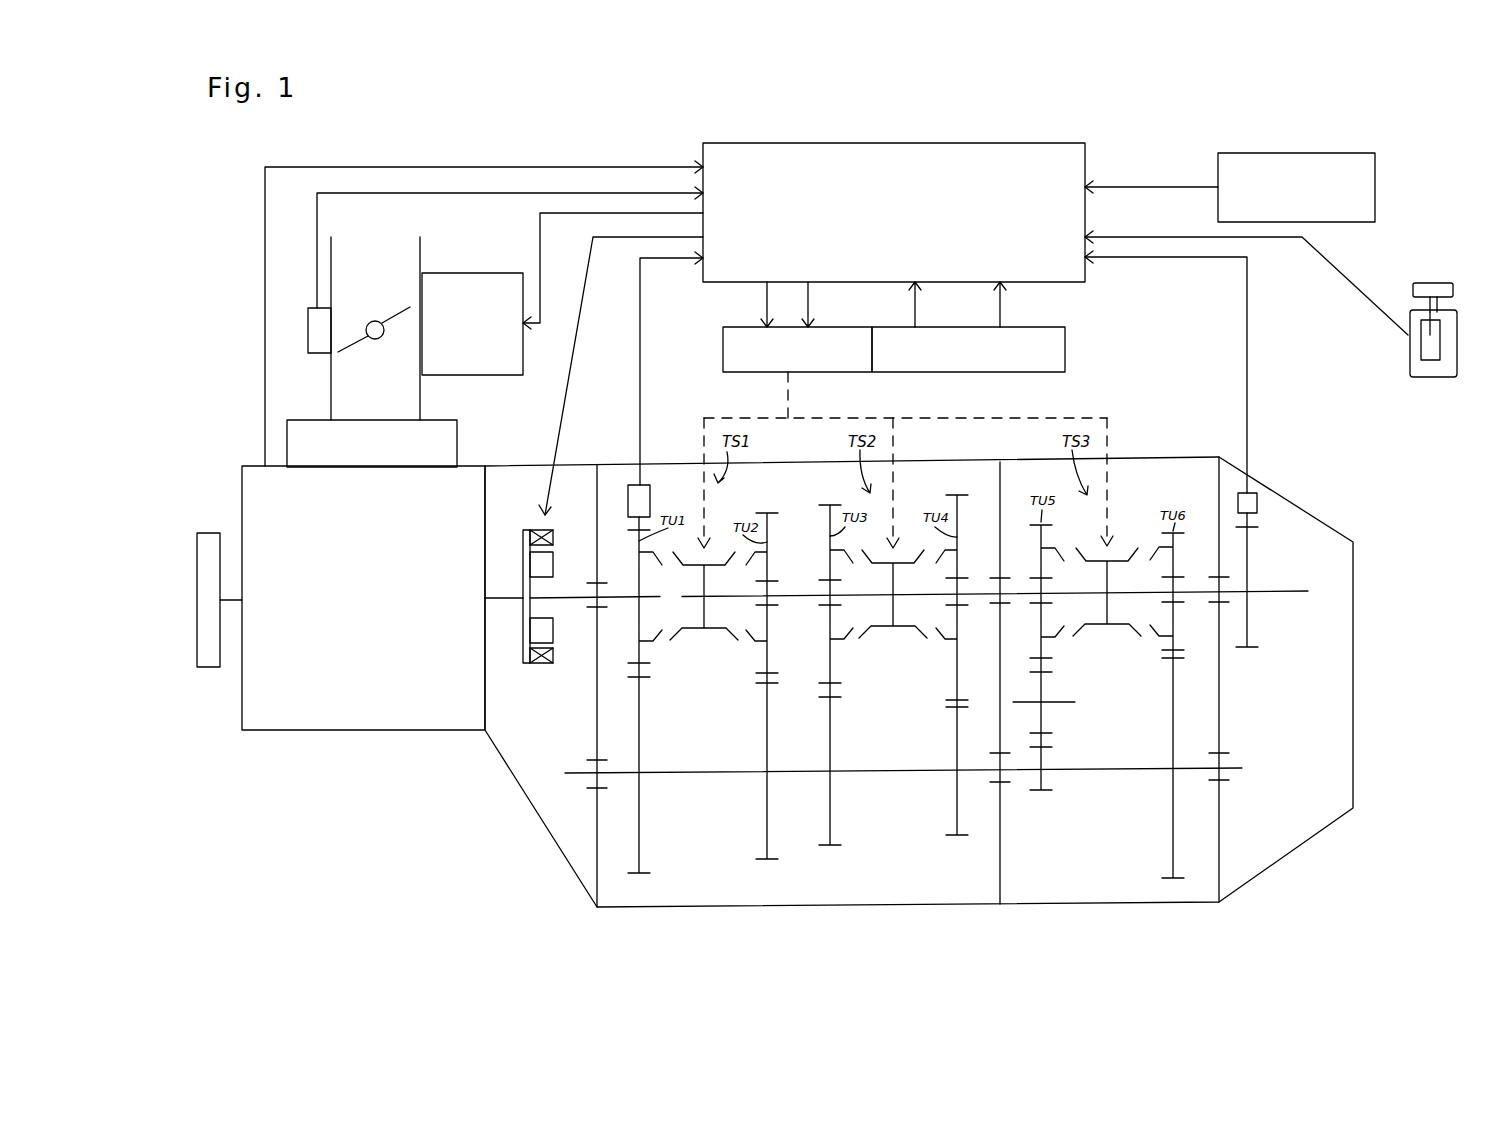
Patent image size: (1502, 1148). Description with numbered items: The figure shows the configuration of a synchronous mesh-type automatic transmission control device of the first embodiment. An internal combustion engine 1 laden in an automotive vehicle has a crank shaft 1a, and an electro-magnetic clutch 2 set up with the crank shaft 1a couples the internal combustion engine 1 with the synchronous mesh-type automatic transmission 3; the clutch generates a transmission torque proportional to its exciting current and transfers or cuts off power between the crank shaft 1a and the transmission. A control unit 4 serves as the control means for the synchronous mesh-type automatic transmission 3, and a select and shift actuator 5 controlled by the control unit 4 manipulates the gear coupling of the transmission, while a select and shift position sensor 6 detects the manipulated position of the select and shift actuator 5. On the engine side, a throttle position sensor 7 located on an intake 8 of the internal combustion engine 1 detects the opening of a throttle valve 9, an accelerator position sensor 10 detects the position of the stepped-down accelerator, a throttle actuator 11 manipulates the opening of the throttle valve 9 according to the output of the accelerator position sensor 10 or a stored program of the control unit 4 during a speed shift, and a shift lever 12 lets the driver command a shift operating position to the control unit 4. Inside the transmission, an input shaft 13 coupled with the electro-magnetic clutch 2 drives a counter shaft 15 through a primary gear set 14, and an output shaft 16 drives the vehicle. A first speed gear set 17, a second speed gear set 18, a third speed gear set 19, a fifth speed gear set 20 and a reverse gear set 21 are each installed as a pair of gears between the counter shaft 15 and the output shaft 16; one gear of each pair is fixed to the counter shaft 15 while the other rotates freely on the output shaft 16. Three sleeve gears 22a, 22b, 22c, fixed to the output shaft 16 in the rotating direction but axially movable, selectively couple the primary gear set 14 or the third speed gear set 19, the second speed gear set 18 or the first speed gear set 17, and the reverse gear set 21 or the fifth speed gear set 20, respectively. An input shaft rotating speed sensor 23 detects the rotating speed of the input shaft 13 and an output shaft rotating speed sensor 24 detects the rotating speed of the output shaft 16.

The internal combustion engine 1 is at (438, 732).
The crank shaft 1a is at (502, 602).
The electro-magnetic clutch 2 is at (535, 663).
The synchronous mesh-type automatic transmission 3 is at (1097, 902).
The control unit 4 is at (1085, 160).
The select and shift actuator 5 is at (723, 345).
The select and shift position sensor 6 is at (1065, 340).
The throttle position sensor 7 is at (308, 308).
The intake 8 is at (420, 250).
The throttle valve 9 is at (370, 343).
The accelerator position sensor 10 is at (1347, 222).
The throttle actuator 11 is at (482, 273).
The shift lever 12 is at (1408, 352).
The input shaft 13 is at (567, 607).
The primary gear set 14 is at (650, 655).
The counter shaft 15 is at (705, 773).
The output shaft 16 is at (1290, 595).
The 1st speed gear set 17 is at (957, 680).
The 2nd speed gear set 18 is at (830, 667).
The 3rd speed gear set 19 is at (763, 660).
The 5th speed gear set 20 is at (1163, 640).
The reverse gear set 21 is at (1057, 653).
The sleeve gear 22a is at (723, 552).
The sleeve gear 22b is at (912, 552).
The sleeve gear 22c is at (1123, 550).
The input shaft rotating speed sensor 23 is at (650, 494).
The output shaft rotating speed sensor 24 is at (1257, 505).